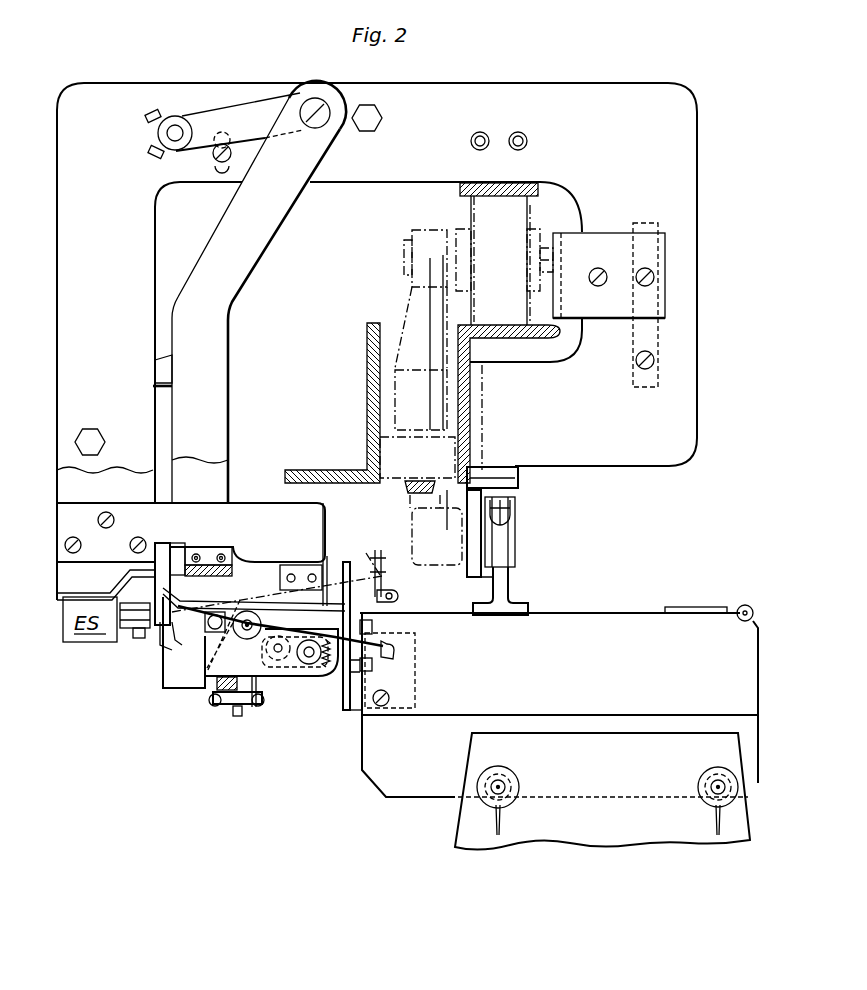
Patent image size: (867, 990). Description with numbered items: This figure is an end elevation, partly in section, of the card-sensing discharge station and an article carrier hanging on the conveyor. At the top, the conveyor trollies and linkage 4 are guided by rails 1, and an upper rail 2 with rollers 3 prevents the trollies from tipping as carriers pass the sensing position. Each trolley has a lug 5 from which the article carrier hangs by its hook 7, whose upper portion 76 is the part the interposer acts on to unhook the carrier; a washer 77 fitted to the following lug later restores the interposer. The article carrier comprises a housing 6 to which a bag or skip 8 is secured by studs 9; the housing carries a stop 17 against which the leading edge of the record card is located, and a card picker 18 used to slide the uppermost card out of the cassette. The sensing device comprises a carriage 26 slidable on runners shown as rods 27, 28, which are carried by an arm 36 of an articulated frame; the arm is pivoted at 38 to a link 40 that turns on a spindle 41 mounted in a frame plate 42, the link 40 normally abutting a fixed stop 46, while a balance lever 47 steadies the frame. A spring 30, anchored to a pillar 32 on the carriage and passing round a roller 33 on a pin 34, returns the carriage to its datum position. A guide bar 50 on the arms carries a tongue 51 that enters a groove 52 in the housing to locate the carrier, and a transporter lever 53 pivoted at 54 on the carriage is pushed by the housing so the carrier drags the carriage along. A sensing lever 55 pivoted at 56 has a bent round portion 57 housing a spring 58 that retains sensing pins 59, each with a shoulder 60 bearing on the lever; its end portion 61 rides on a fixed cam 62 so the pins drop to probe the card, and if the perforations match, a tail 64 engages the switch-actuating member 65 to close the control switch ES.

The rails 1 is at (533, 333).
The upper rail 2 is at (526, 193).
The rollers 3 is at (523, 223).
The trollies and linkage 4 is at (415, 309).
The lug 5 is at (517, 528).
The housing 6 is at (723, 637).
The hook 7 is at (509, 571).
The bag or skip 8 is at (738, 826).
The studs 9 is at (493, 805).
The stop 17 is at (367, 630).
The card picker 18 is at (666, 611).
The carriage 26 is at (298, 678).
The rod 27 is at (311, 655).
The rod 28 is at (214, 625).
The spring 30 is at (210, 702).
The pillar 32 is at (262, 680).
The roller 33 is at (233, 704).
The pin 34 is at (236, 719).
The arm 36 is at (282, 231).
The pivot 38 is at (314, 105).
The link 40 is at (246, 110).
The spindle 41 is at (177, 128).
The frame plate 42 is at (123, 96).
The fixed stop 46 is at (219, 160).
The balance lever 47 is at (165, 374).
The guide bar 50 is at (352, 655).
The tongue 51 is at (372, 665).
The groove 52 is at (366, 668).
The transporter lever 53 is at (392, 655).
The pivot 54 is at (279, 652).
The sensing lever 55 is at (336, 604).
The pivot 56 is at (250, 618).
The bent round portion 57 is at (390, 596).
The spring 58 is at (398, 597).
The sensing pins 59 is at (381, 568).
The shoulder 60 is at (358, 610).
The end portion 61 is at (212, 606).
The fixed cam 62 is at (190, 570).
The tail 64 is at (175, 623).
The switch-actuating member 65 is at (165, 633).
The upper portion 76 is at (512, 500).
The washer 77 is at (484, 577).